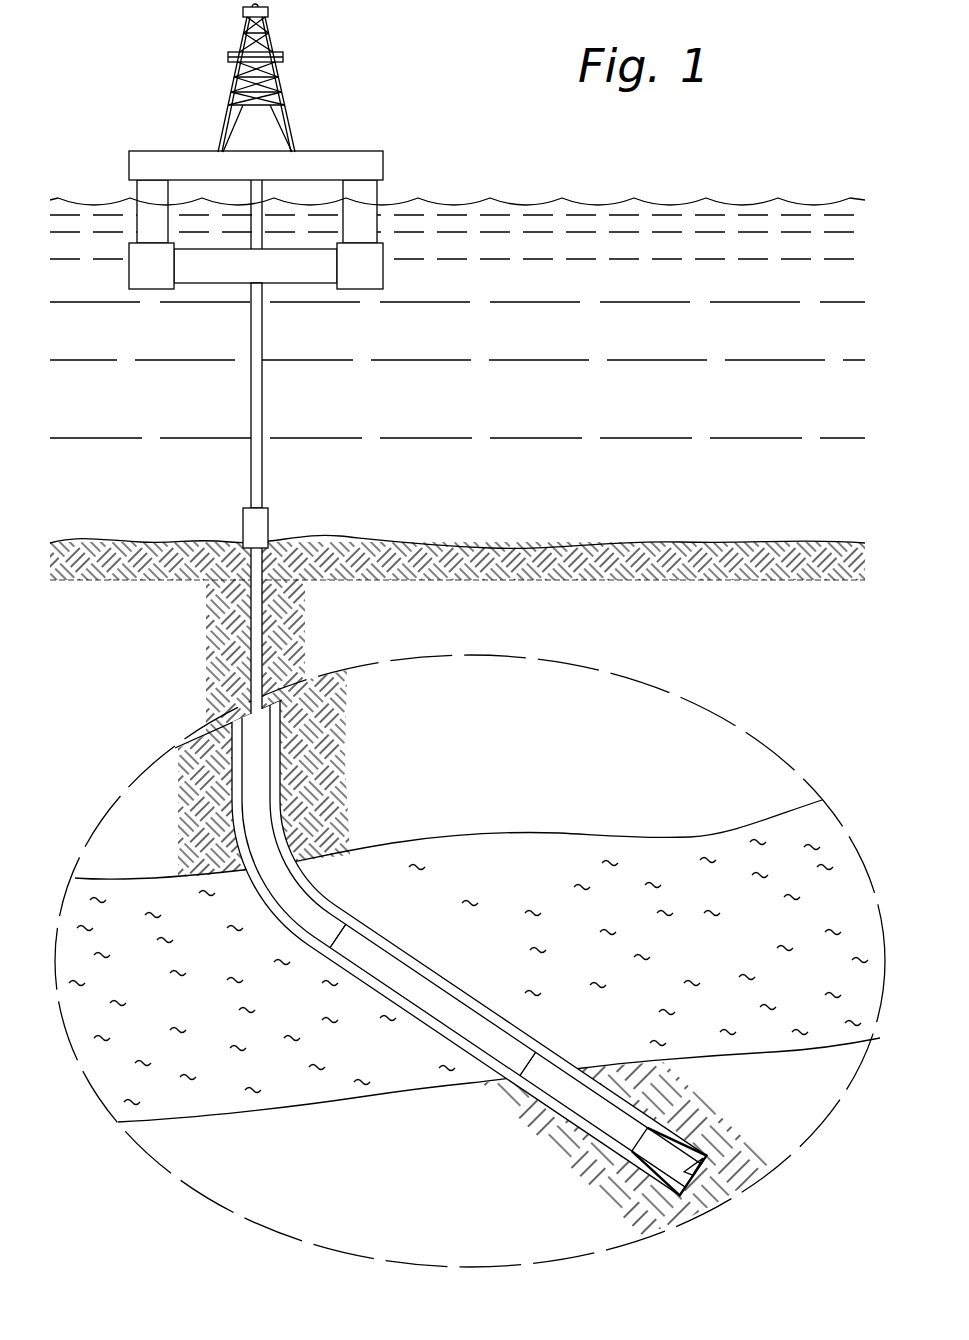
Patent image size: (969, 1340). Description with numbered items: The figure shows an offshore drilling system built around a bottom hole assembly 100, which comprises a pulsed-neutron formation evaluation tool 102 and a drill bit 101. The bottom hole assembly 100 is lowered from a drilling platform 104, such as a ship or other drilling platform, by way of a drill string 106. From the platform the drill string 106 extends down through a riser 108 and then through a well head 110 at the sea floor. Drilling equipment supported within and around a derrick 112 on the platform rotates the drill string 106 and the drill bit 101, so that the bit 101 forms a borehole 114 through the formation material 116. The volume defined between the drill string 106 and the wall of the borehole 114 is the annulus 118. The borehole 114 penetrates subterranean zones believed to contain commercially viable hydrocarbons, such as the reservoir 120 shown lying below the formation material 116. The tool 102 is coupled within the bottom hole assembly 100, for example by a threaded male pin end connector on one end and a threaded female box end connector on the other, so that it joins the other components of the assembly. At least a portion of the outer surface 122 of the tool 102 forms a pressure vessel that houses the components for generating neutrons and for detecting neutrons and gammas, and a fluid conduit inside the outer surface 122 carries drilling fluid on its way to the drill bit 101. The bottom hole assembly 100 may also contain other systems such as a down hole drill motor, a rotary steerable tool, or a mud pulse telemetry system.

The bottom hole assembly 100 is at (666, 1219).
The drill bit 101 is at (675, 1145).
The pulsed-neutron formation evaluation tool 102 is at (551, 1044).
The drilling platform 104 is at (383, 165).
The drill string 106 is at (310, 917).
The riser 108 is at (262, 399).
The well head 110 is at (268, 518).
The derrick 112 is at (270, 32).
The borehole 114 is at (278, 790).
The formation material 116 is at (312, 730).
The annulus 118 is at (275, 832).
The reservoir 120 is at (716, 957).
The outer surface 122 is at (418, 999).